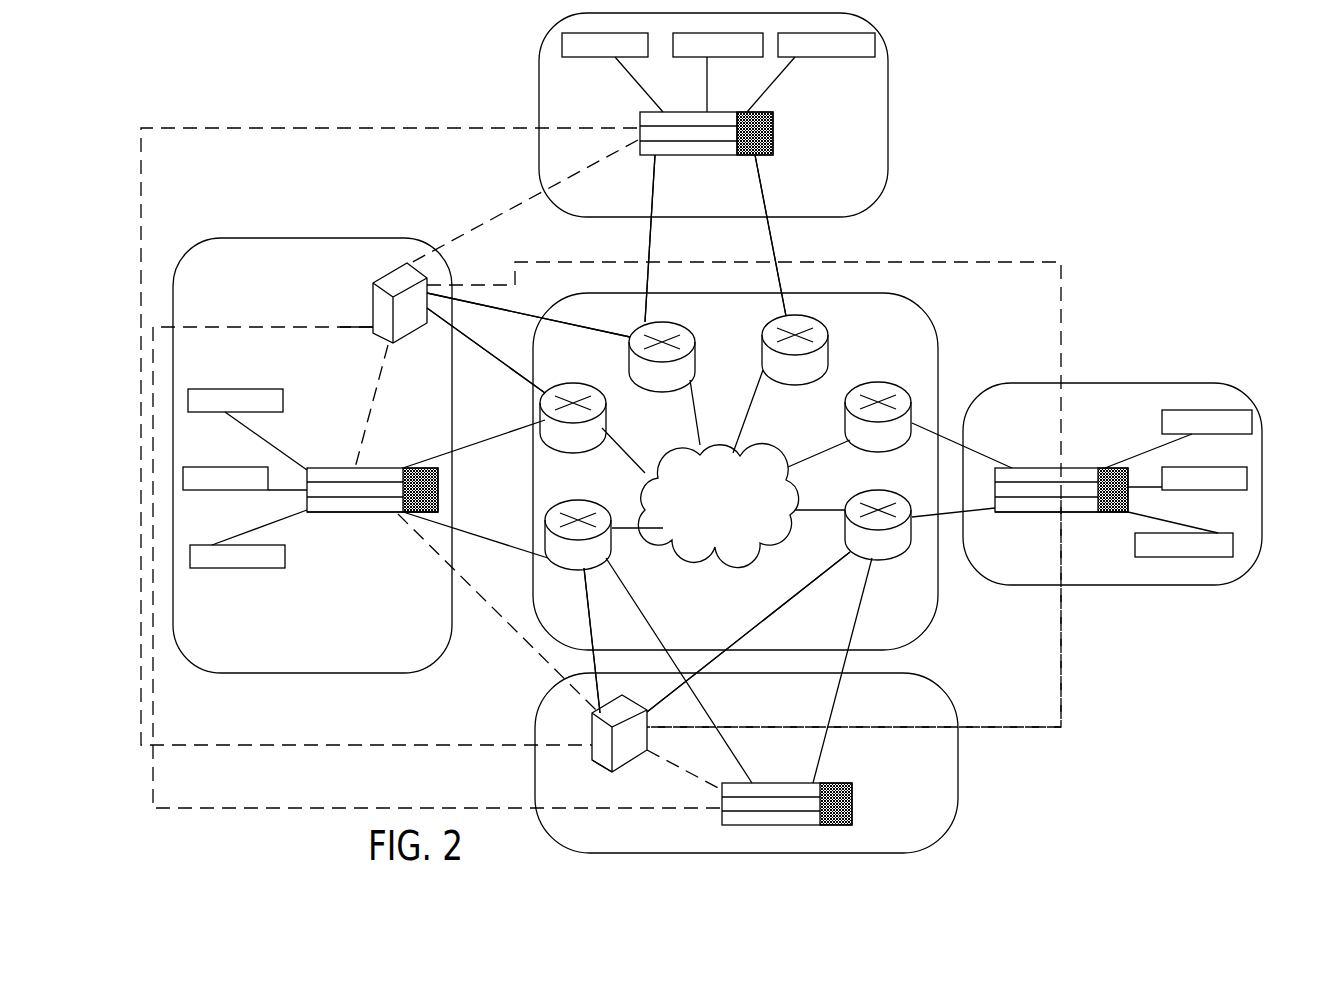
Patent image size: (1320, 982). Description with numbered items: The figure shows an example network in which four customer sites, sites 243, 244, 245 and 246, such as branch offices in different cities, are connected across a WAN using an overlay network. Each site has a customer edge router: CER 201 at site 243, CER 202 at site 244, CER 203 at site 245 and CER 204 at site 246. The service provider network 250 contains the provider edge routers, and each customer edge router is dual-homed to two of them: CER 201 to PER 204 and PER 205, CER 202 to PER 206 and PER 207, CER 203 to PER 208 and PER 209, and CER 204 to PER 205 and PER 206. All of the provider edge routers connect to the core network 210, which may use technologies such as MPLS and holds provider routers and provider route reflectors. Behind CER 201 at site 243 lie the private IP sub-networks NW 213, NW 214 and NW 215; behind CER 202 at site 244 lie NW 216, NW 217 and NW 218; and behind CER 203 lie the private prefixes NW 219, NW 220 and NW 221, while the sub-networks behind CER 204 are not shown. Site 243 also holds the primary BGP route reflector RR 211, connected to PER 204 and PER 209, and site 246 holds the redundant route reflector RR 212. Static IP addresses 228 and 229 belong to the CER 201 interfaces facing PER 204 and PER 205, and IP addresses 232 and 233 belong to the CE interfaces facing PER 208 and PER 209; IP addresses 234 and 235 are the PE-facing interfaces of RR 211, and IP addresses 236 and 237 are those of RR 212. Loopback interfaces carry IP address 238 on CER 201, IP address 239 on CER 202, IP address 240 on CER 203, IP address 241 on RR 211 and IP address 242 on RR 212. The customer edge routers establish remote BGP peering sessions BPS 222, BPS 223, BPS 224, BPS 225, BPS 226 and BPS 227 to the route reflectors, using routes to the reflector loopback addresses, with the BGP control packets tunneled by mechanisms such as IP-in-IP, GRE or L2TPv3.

The customer edge router 201 is at (372, 506).
The customer edge router 202 is at (1061, 505).
The customer edge router 203 is at (713, 217).
The customer edge router / provider edge router 204 is at (696, 620).
The provider edge router 205 is at (648, 641).
The provider edge router 206 is at (821, 636).
The provider edge router 207 is at (900, 429).
The provider edge router 208 is at (781, 384).
The provider edge router 209 is at (664, 383).
The core network 210 is at (718, 506).
The BGP route reflector 211 is at (448, 328).
The BGP route reflector 212 is at (619, 749).
The private IP sub-network 213 is at (247, 429).
The private IP sub-network 214 is at (245, 478).
The private IP sub-network 215 is at (248, 539).
The private IP sub-network 216 is at (1178, 439).
The private IP sub-network 217 is at (1187, 478).
The private IP sub-network 218 is at (1180, 534).
The private customer IP network prefix 219 is at (612, 72).
The private customer IP network prefix 220 is at (718, 72).
The private customer IP network prefix 221 is at (811, 72).
The BGP peering session 222 is at (347, 406).
The BGP peering session 223 is at (782, 489).
The BGP peering session 224 is at (522, 202).
The BGP peering session 225 is at (436, 567).
The BGP peering session 226 is at (895, 613).
The BGP peering session 227 is at (389, 424).
The IP address 228 is at (474, 451).
The IP address 229 is at (475, 532).
The IP address 232 is at (788, 235).
The IP address 233 is at (663, 238).
The IP address 234 is at (486, 350).
The IP address 235 is at (528, 314).
The IP address 236 is at (619, 640).
The IP address 237 is at (748, 641).
The IP address 238 is at (372, 539).
The IP address 239 is at (1061, 537).
The IP address 240 is at (787, 133).
The IP address 241 is at (321, 322).
The IP address 242 is at (617, 793).
The customer site 243 is at (217, 238).
The customer site 244 is at (1162, 383).
The customer site 245 is at (888, 75).
The customer site 246 is at (958, 788).
The service provider network 250 is at (738, 610).